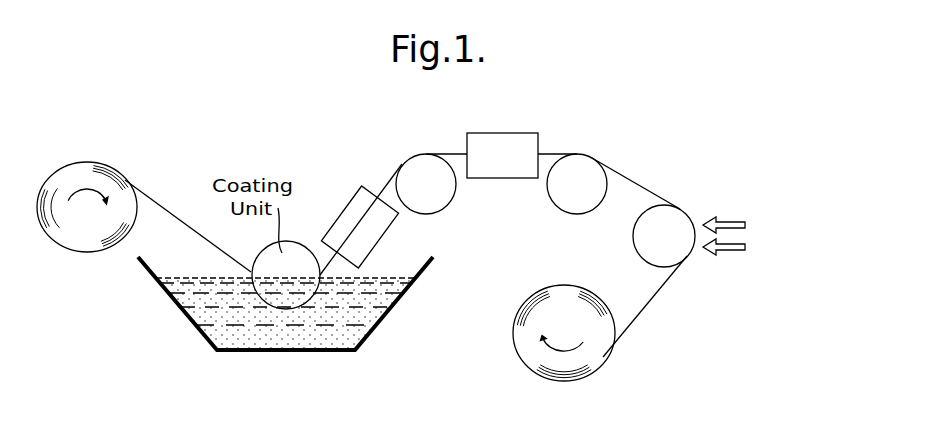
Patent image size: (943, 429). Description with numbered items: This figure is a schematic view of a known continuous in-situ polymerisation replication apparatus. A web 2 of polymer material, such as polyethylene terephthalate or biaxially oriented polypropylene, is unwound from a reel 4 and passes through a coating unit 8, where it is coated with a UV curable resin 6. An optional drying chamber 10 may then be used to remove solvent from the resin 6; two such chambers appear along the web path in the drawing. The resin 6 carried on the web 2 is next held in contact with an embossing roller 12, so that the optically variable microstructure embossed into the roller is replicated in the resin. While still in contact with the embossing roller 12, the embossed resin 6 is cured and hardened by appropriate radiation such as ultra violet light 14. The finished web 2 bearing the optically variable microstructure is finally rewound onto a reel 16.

The web 2 is at (168, 212).
The reel 4 is at (75, 235).
The UV curable resin 6 is at (273, 335).
The coating unit 8 is at (377, 328).
The optional drying chamber 10 is at (543, 110).
The embossing roller 12 is at (648, 265).
The ultra violet light 14 is at (777, 237).
The reel 16 is at (535, 310).